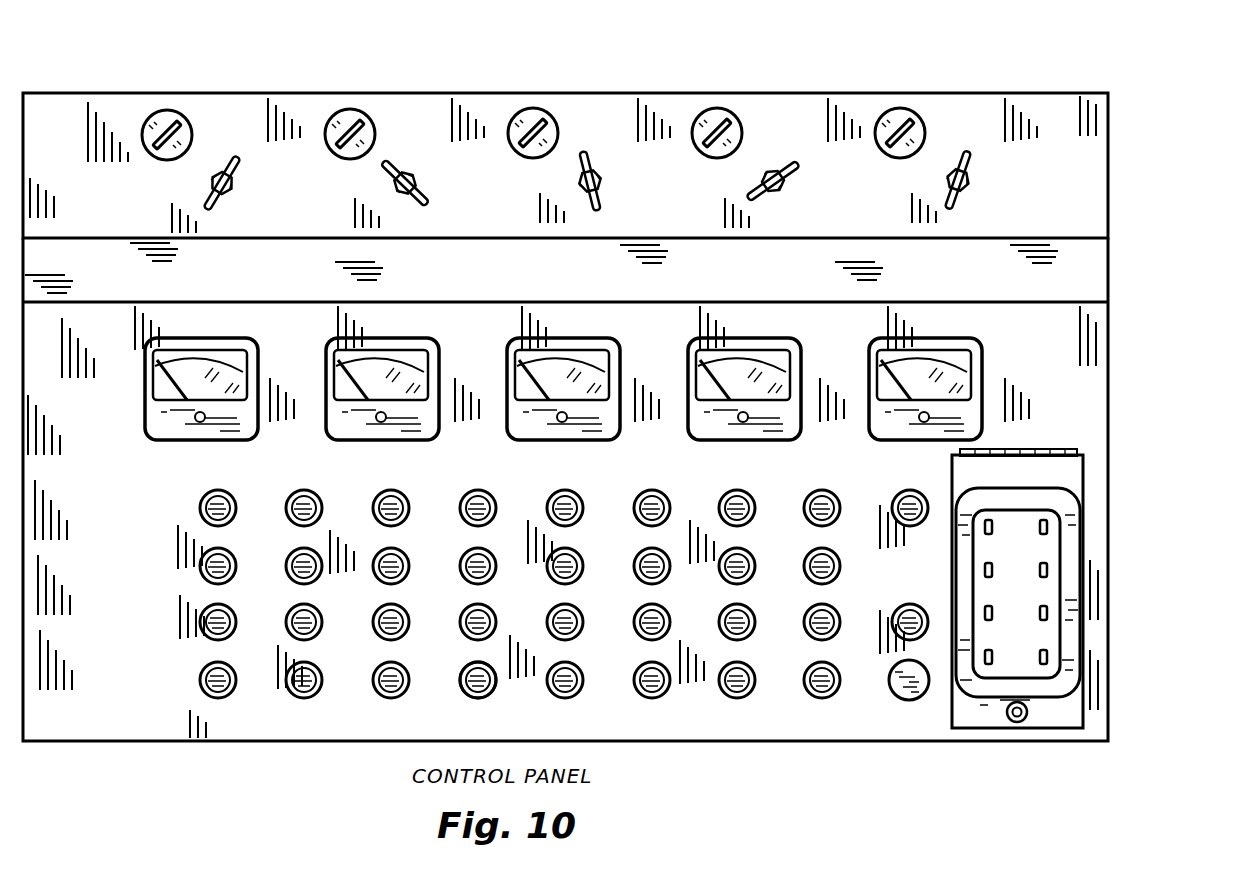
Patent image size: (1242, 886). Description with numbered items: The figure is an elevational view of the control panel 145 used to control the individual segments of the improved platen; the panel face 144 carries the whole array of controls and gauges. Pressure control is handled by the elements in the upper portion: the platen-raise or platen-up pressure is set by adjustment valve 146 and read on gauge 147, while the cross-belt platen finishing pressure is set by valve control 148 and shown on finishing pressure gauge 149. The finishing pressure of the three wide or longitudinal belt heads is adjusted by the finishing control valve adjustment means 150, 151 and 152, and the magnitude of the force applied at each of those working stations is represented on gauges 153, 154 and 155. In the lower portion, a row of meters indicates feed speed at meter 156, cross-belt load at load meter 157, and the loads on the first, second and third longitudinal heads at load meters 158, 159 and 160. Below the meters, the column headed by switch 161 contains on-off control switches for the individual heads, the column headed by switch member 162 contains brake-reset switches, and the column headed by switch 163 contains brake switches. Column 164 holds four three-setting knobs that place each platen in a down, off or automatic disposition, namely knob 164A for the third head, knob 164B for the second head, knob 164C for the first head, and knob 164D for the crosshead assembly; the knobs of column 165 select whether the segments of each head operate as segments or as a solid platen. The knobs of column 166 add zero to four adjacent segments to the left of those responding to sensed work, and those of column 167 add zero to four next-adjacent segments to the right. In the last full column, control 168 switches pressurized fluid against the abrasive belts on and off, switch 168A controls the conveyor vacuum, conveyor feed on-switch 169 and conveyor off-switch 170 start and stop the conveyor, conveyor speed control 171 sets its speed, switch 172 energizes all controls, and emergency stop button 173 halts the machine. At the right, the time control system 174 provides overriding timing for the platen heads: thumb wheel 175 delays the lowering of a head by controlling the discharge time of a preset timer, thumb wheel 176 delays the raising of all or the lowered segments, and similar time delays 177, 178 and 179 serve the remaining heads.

The control panel upper section 144 is at (1067, 148).
The control panel 145 is at (1130, 627).
The adjustment valve 146 is at (969, 183).
The gauge 147 is at (898, 108).
The valve control 148 is at (784, 184).
The finishing pressure gauge 149 is at (715, 108).
The finishing control valve adjustment means 150 is at (601, 184).
The finishing control valve adjustment means 151 is at (416, 186).
The finishing control valve adjustment means 152 is at (233, 186).
The gauge 153 is at (531, 108).
The gauge 154 is at (348, 109).
The gauge 155 is at (165, 110).
The feed-speed meter 156 is at (923, 338).
The cross-belt load meter 157 is at (742, 338).
The load meter 158 is at (552, 338).
The load meter 159 is at (371, 338).
The load meter 160 is at (190, 338).
The on-off control switch 161 is at (214, 490).
The brake-reset switch 162 is at (300, 490).
The brake switch 163 is at (388, 490).
The platen control column 164 is at (472, 490).
The knob 164A is at (474, 527).
The knob 164B is at (474, 584).
The knob 164C is at (474, 640).
The knob 164D is at (474, 698).
The platen control column 165 is at (560, 490).
The control knob column 166 is at (648, 490).
The control knob column 167 is at (733, 490).
The control 168 is at (818, 490).
The switch 168A is at (817, 550).
The conveyor feed on-switch 169 is at (808, 608).
The conveyor off-switch 170 is at (808, 666).
The conveyor speed control 171 is at (904, 490).
The switch 172 is at (904, 604).
The emergency stop button 173 is at (903, 700).
The time control system 174 is at (1062, 476).
The thumb wheel 175 is at (988, 517).
The thumb wheel 176 is at (1050, 527).
The time delay 177 is at (1038, 570).
The time delay 178 is at (1038, 613).
The time delay 179 is at (1038, 657).